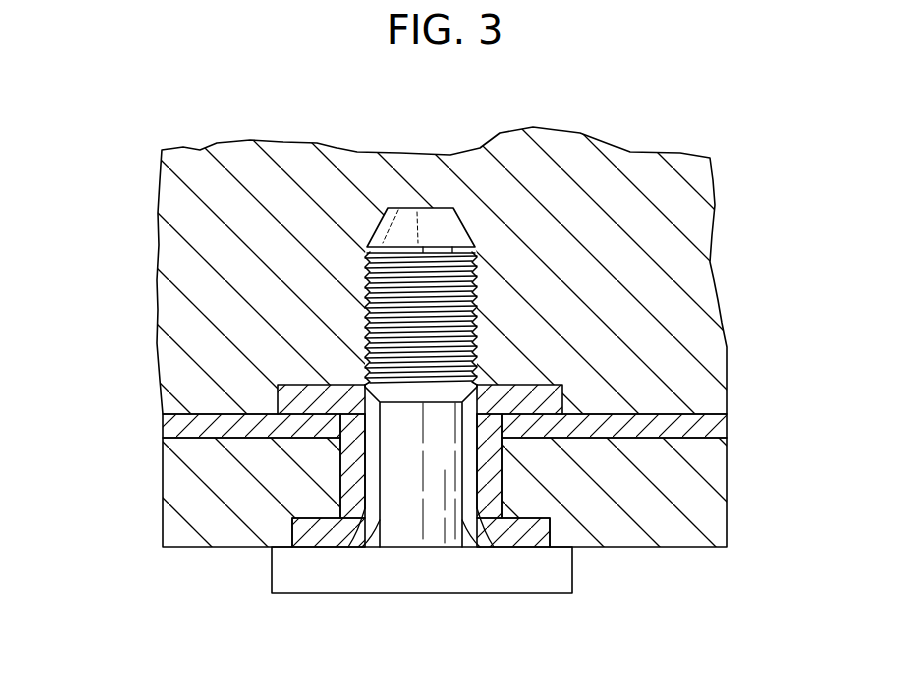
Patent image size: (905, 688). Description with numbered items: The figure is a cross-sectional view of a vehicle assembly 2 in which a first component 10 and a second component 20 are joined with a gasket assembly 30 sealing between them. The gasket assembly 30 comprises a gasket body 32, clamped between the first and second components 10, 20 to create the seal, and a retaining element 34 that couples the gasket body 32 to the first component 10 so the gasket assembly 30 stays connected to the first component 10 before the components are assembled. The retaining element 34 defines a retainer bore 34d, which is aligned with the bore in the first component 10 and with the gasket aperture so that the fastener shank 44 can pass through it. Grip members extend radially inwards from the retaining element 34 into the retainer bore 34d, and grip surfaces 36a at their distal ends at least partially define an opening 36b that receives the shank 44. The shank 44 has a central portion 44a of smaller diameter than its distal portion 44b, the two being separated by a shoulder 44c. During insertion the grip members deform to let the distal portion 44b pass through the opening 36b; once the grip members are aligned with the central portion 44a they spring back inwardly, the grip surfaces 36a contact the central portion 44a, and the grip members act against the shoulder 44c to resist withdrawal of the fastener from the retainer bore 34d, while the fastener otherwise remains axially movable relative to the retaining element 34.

The assembly 2 is at (738, 113).
The first component 10 is at (673, 502).
The second component 20 is at (654, 236).
The gasket assembly 30 is at (715, 429).
The gasket body 32 is at (200, 425).
The retaining element 34 is at (347, 470).
The retainer bore 34d is at (478, 472).
The grip surfaces 36a is at (365, 510).
The opening 36b is at (415, 520).
The shank 44 is at (387, 297).
The central portion 44a is at (430, 417).
The distal portion 44b is at (447, 280).
The shoulder 44c is at (365, 410).